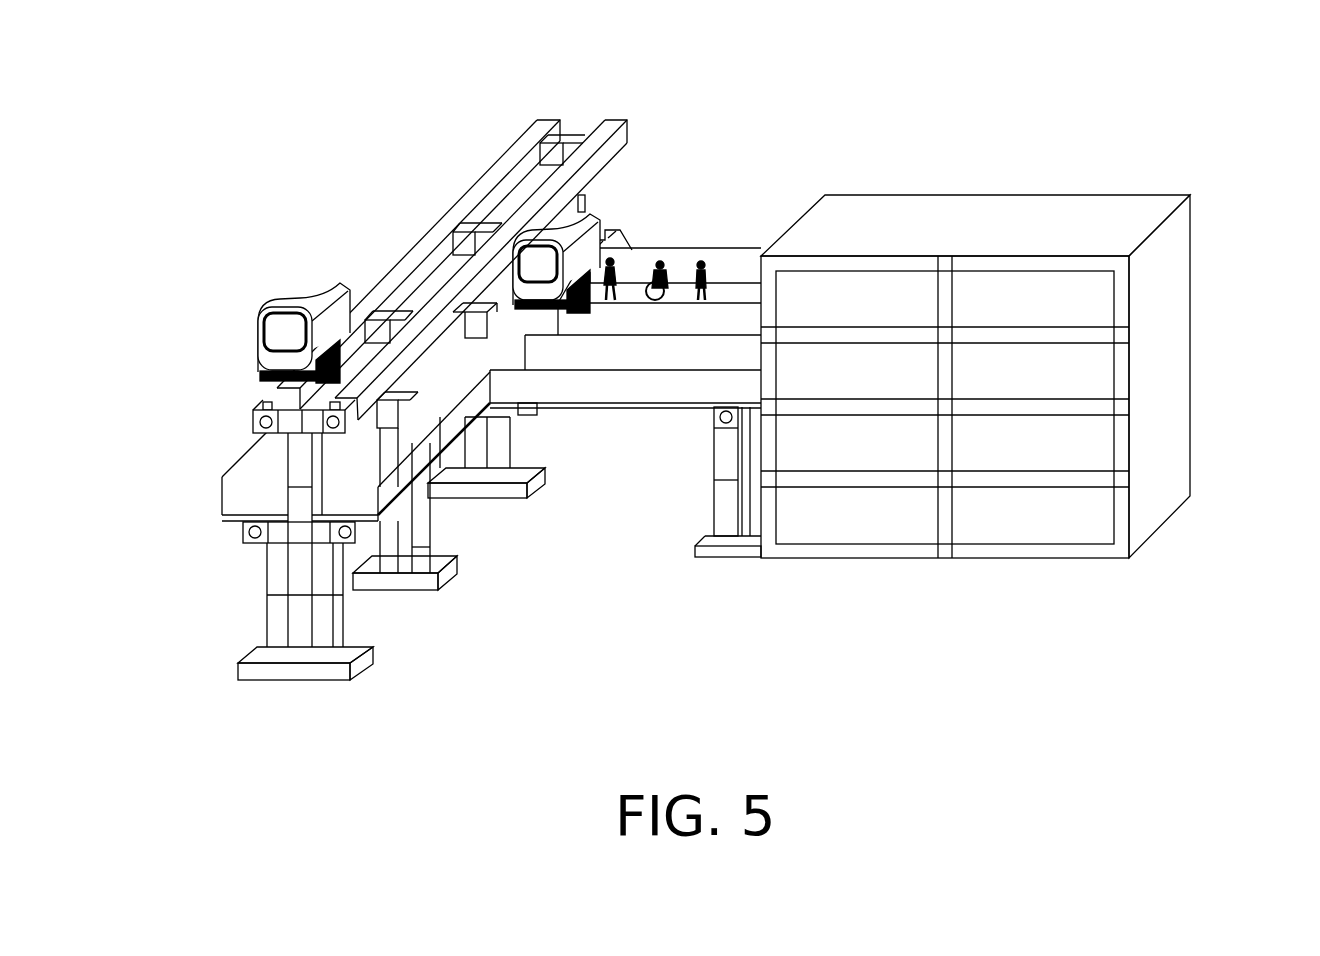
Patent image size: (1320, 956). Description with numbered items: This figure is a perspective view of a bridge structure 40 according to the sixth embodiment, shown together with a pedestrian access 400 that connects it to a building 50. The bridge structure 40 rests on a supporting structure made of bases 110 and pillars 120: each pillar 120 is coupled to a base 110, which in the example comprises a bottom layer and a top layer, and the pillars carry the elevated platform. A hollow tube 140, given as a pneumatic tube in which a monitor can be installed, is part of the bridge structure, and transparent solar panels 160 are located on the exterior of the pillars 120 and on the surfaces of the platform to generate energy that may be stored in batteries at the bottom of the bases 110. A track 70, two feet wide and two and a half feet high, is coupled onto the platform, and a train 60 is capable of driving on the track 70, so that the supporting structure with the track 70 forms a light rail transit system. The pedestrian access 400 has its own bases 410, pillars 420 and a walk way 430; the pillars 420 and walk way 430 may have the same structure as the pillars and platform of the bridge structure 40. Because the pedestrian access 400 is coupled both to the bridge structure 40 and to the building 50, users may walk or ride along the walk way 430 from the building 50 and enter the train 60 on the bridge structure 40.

The bridge structure 40 is at (292, 64).
The building 50 is at (1250, 210).
The train 60 is at (232, 293).
The track 70 is at (258, 402).
The base 110 is at (305, 700).
The pillar 120 is at (190, 631).
The hollow tube 140 is at (243, 530).
The solar panels 160 is at (273, 614).
The pedestrian access 400 is at (610, 590).
The bases 410 is at (737, 553).
The pillars 420 is at (690, 510).
The walk way 430 is at (607, 440).